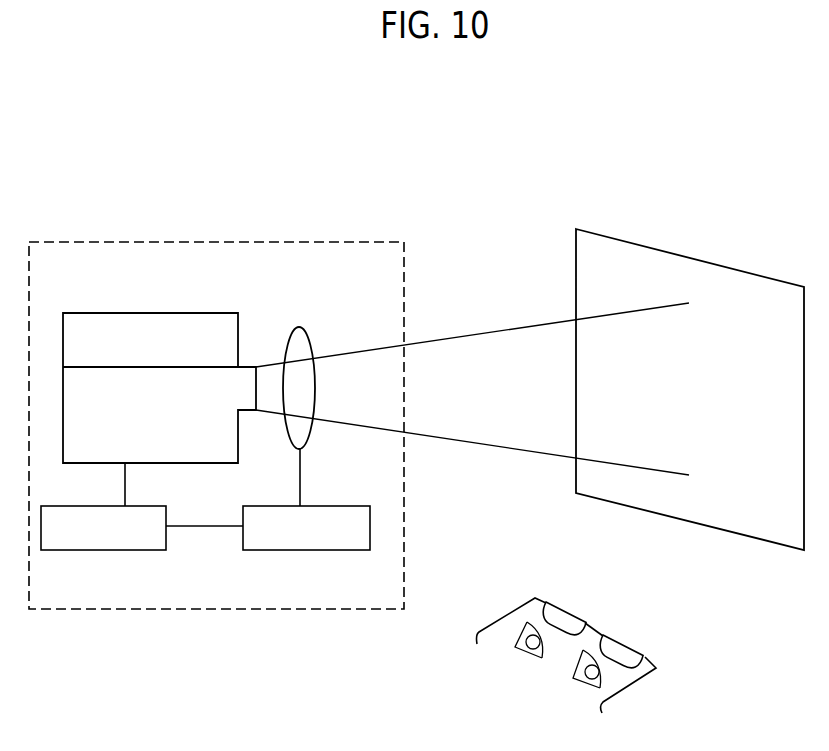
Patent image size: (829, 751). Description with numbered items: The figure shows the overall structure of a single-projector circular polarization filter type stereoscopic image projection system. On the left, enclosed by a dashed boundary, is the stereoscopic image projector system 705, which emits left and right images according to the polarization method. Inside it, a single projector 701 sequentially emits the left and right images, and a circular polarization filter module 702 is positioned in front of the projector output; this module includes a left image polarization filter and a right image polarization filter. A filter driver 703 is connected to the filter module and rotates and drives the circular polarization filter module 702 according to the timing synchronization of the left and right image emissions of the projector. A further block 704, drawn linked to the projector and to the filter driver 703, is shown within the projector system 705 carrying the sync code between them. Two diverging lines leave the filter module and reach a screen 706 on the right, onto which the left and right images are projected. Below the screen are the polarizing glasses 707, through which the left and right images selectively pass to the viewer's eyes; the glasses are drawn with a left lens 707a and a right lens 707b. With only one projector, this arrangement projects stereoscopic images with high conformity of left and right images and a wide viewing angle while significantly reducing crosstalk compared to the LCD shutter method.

The single projector 701 is at (148, 328).
The circular polarization filter module 702 is at (315, 392).
The filter driver 703 is at (310, 540).
The synchronizer 704 is at (126, 540).
The stereoscopic image projector system 705 is at (331, 242).
The screen 706 is at (665, 258).
The polarizing glasses 707 is at (595, 630).
The left lens of glasses 707a is at (575, 612).
The right lens of glasses 707b is at (630, 647).